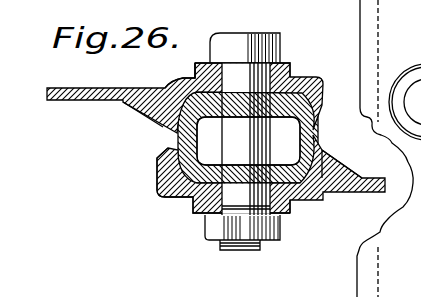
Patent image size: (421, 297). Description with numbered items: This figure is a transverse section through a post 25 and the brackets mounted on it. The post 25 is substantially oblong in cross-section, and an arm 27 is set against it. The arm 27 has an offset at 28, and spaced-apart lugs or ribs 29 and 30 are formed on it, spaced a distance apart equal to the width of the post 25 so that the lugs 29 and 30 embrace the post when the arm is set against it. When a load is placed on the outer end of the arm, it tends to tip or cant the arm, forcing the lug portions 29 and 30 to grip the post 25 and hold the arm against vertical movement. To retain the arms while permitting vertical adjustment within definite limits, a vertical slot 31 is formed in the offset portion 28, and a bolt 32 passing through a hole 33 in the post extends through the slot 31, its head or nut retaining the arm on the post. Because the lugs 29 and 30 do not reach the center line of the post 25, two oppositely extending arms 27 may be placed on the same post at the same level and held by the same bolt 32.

The post 25 is at (178, 168).
The arm 27 is at (83, 82).
The offset 28 is at (187, 77).
The lug 29 is at (163, 128).
The lug 30 is at (318, 125).
The vertical slot 31 is at (293, 70).
The bolt 32 is at (248, 250).
The hole 33 is at (173, 202).